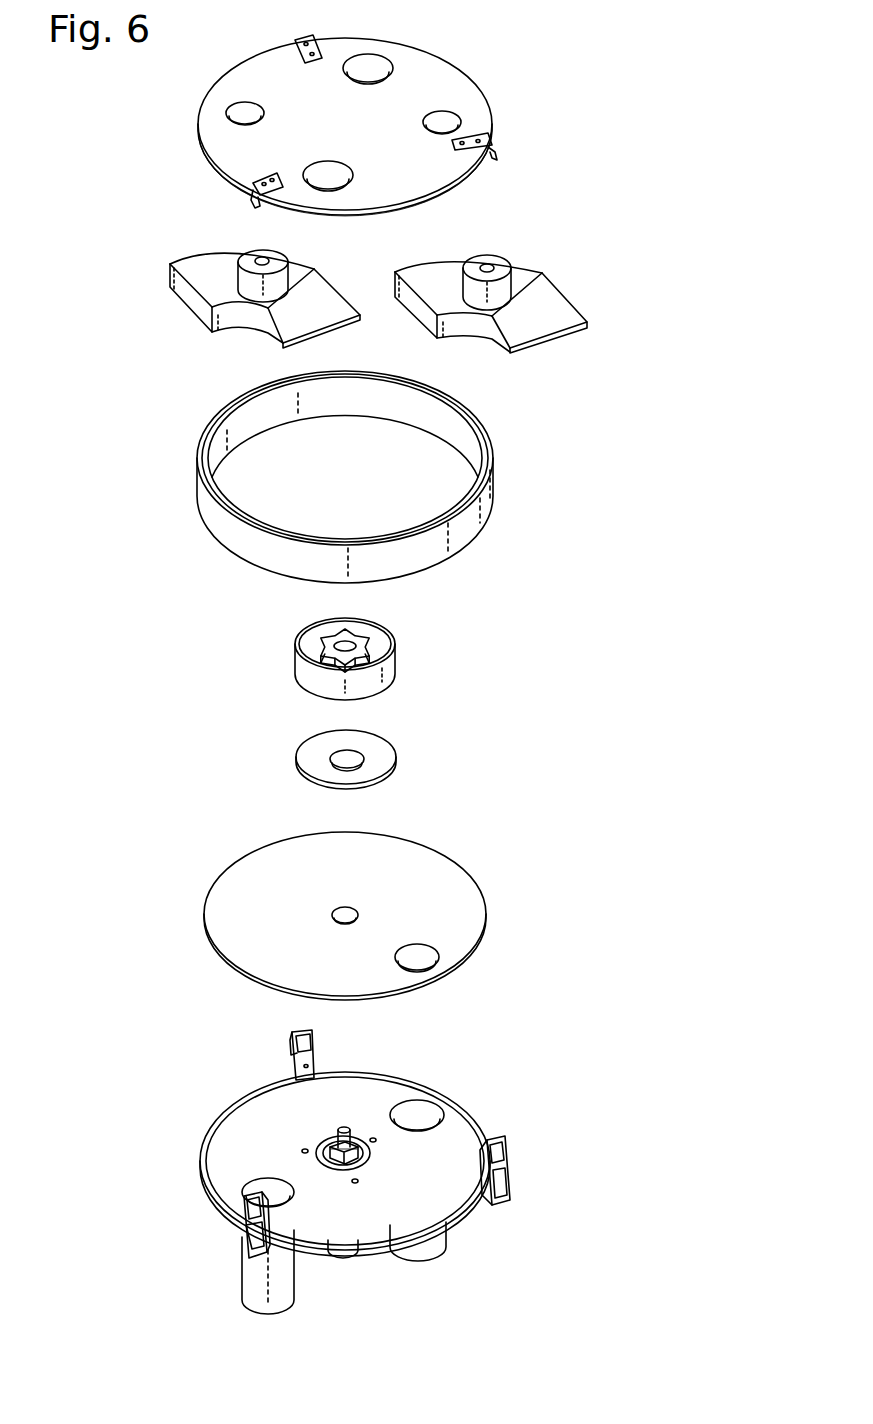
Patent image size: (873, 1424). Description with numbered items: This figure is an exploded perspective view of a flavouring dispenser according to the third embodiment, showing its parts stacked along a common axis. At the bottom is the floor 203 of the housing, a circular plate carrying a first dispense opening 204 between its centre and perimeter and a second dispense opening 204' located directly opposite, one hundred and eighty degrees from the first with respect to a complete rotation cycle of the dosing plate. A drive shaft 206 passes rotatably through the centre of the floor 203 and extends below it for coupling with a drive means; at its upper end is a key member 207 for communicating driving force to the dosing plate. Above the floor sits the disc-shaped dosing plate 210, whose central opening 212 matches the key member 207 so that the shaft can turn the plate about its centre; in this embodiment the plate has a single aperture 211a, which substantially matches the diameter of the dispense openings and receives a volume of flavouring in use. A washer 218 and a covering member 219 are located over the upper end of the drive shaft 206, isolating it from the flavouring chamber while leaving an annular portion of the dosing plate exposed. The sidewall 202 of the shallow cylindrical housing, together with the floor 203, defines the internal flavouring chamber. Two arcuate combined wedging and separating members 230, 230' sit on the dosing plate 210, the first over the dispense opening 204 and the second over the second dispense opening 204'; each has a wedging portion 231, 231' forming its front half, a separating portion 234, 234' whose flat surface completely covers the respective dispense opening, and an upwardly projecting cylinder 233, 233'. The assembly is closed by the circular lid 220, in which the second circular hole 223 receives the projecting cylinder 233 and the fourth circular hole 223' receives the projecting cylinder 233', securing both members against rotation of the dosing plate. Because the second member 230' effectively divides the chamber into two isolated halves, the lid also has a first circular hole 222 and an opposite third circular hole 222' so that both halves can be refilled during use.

The circular lid 220 is at (442, 75).
The second circular hole 223 is at (397, 48).
The fourth circular hole 223' is at (372, 203).
The first circular hole 222 is at (495, 116).
The third circular hole 222' is at (192, 118).
The combined wedging and separating member 230 is at (218, 276).
The wedging portion 231 is at (210, 298).
The projecting cylinder 233 is at (224, 241).
The separating portion 234 is at (268, 321).
The second combined wedging and separating member 230' is at (521, 281).
The wedging portion 231' is at (455, 311).
The projecting cylinder 233' is at (551, 256).
The separating portion 234' is at (587, 313).
The sidewall 202 is at (227, 530).
The covering member 219 is at (370, 682).
The washer 218 is at (310, 755).
The dosing plate 210 is at (227, 915).
The opening 212 is at (343, 908).
The aperture 211a is at (427, 960).
The floor 203 is at (222, 1147).
The drive shaft 206 is at (328, 1140).
The key member 207 is at (372, 1163).
The first dispense opening 204 is at (460, 1104).
The second dispense opening 204' is at (300, 1250).